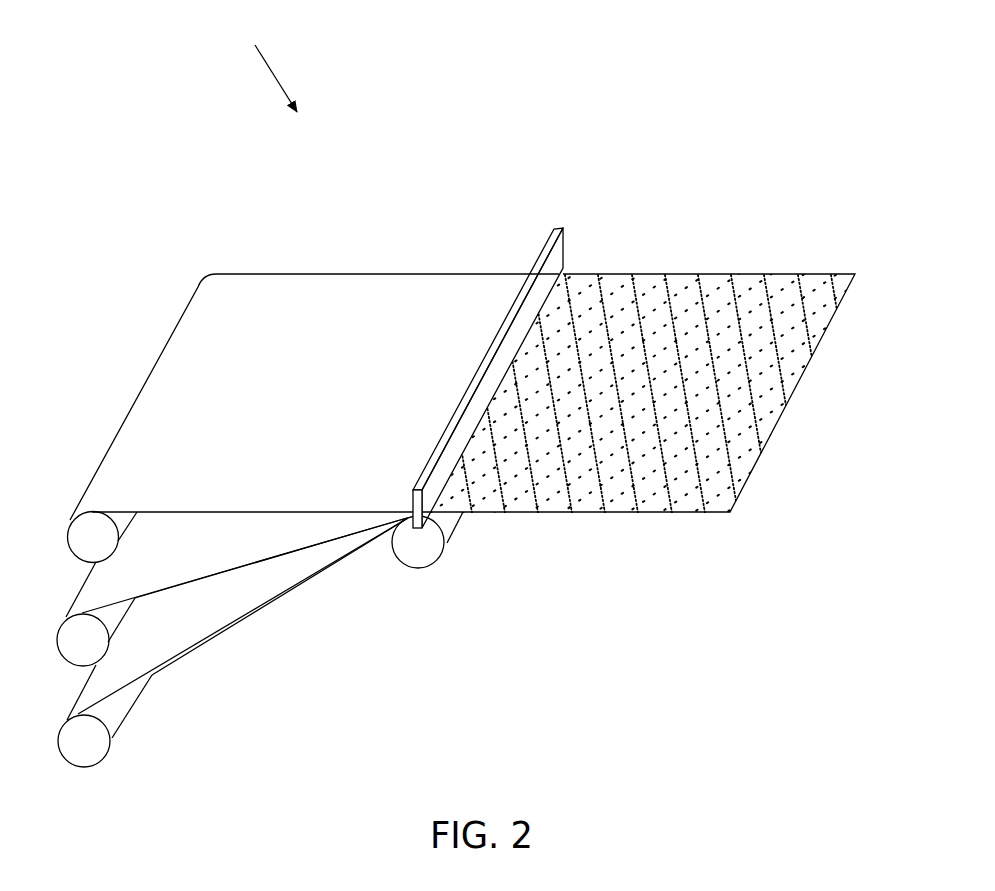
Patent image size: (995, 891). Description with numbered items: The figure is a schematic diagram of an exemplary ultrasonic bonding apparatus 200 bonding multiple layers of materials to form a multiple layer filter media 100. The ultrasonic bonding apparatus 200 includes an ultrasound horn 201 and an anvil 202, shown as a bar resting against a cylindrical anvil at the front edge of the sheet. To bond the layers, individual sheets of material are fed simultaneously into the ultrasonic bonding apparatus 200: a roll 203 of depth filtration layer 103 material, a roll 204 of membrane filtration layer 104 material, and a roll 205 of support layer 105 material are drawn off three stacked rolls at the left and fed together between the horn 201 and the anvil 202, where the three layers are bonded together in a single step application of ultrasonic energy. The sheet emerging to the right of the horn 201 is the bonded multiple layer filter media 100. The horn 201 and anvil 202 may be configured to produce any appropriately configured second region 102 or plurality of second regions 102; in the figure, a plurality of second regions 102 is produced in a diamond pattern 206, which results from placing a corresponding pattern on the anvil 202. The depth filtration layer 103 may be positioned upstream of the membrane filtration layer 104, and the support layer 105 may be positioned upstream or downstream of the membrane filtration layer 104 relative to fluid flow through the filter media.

The ultrasonic bonding apparatus 200 is at (264, 61).
The multiple layer filter media 100 is at (788, 270).
The second region 102 is at (653, 281).
The depth filtration layer 103 is at (82, 690).
The membrane filtration layer 104 is at (82, 590).
The support layer 105 is at (176, 325).
The ultrasound horn 201 is at (549, 246).
The anvil 202 is at (418, 568).
The roll 203 is at (102, 749).
The roll 204 is at (100, 649).
The roll 205 is at (108, 545).
The diamond pattern 206 is at (702, 296).